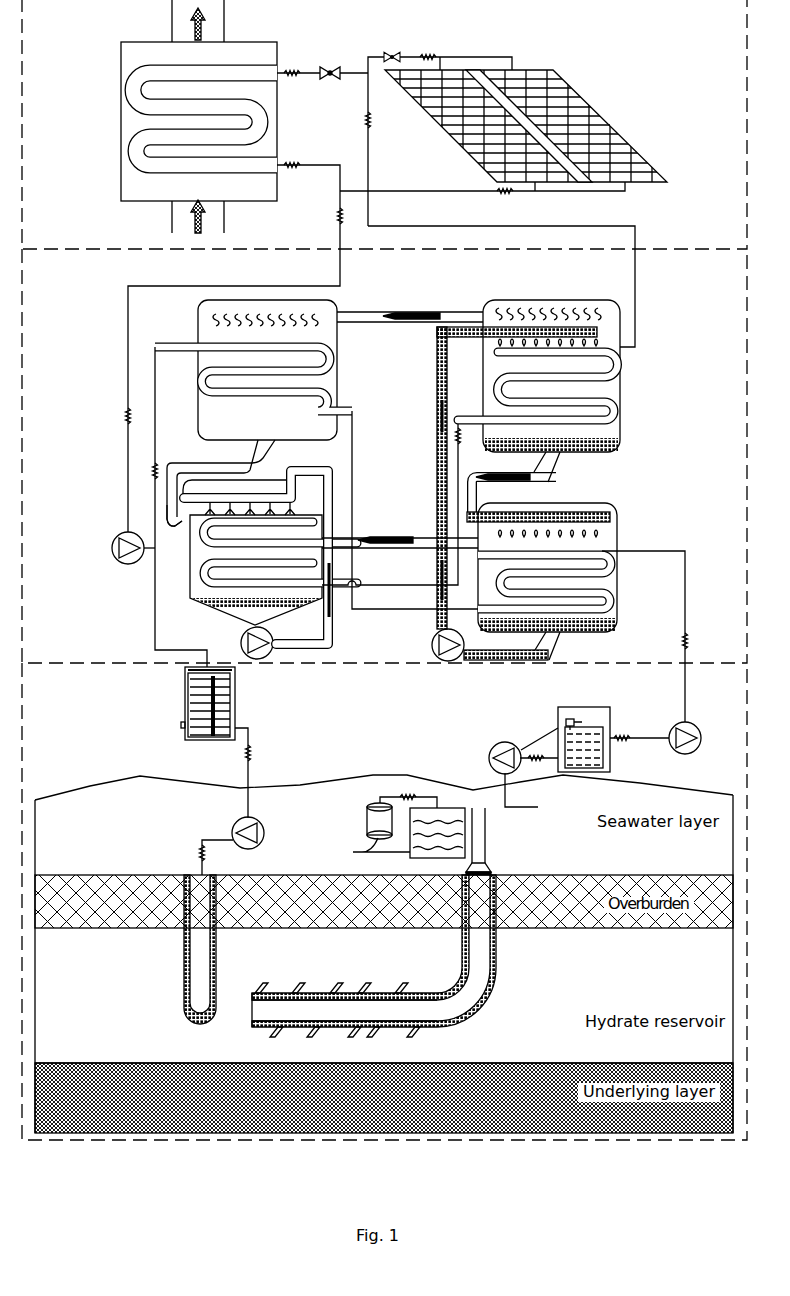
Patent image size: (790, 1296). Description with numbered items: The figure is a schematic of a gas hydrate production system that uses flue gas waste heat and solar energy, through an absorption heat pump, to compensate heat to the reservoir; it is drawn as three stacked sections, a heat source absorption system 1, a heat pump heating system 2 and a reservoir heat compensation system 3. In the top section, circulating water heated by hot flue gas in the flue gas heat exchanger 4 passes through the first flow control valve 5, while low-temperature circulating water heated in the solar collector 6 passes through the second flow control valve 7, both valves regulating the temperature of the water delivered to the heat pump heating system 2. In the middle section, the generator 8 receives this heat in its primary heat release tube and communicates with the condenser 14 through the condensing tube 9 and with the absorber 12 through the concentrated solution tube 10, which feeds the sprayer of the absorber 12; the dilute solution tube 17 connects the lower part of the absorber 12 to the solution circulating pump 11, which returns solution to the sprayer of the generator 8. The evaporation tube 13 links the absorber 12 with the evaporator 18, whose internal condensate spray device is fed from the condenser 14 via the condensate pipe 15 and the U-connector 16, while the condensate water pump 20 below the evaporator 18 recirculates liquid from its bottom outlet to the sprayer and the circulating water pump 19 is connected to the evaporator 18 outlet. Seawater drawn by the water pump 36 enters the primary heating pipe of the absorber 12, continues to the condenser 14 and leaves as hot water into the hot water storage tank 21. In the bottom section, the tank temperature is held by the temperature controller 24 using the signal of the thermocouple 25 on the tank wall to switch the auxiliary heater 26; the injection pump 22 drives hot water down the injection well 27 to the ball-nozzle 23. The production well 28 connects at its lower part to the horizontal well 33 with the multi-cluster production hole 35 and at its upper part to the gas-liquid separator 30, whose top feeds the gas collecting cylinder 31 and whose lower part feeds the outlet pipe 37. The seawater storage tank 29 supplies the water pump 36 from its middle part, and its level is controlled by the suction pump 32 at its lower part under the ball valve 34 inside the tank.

The heat source absorption system 1 is at (384, 124).
The heat pump heating system 2 is at (384, 456).
The reservoir heat compensation system 3 is at (384, 901).
The flue gas heat exchanger 4 is at (137, 123).
The first flow control valve 5 is at (332, 70).
The solar collector 6 is at (543, 86).
The second flow control valve 7 is at (393, 56).
The generator 8 is at (605, 312).
The condensing tube 9 is at (460, 312).
The concentrated solution tube 10 is at (549, 468).
The solution circulating pump 11 is at (440, 661).
The absorber 12 is at (590, 508).
The evaporation tube 13 is at (422, 543).
The condenser 14 is at (208, 313).
The condensate pipe 15 is at (266, 470).
The U-connector 16 is at (166, 521).
The dilute solution tube 17 is at (562, 648).
The evaporator 18 is at (195, 548).
The circulating water pump 19 is at (120, 541).
The condensate water pump 20 is at (242, 643).
The hot water storage tank 21 is at (226, 689).
The injection pump 22 is at (240, 826).
The ball-nozzle 23 is at (186, 1008).
The temperature controller 24 is at (182, 722).
The thermocouple 25 is at (232, 712).
The auxiliary heater 26 is at (188, 672).
The injection well 27 is at (195, 866).
The production well 28 is at (472, 960).
The seawater storage tank 29 is at (606, 742).
The gas-liquid separator 30 is at (449, 815).
The gas collecting cylinder 31 is at (371, 816).
The suction pump 32 is at (502, 748).
The horizontal well 33 is at (408, 1006).
The ball valve 34 is at (566, 720).
The multi-cluster production hole 35 is at (284, 1031).
The water pump 36 is at (684, 753).
The outlet pipe 37 is at (378, 850).